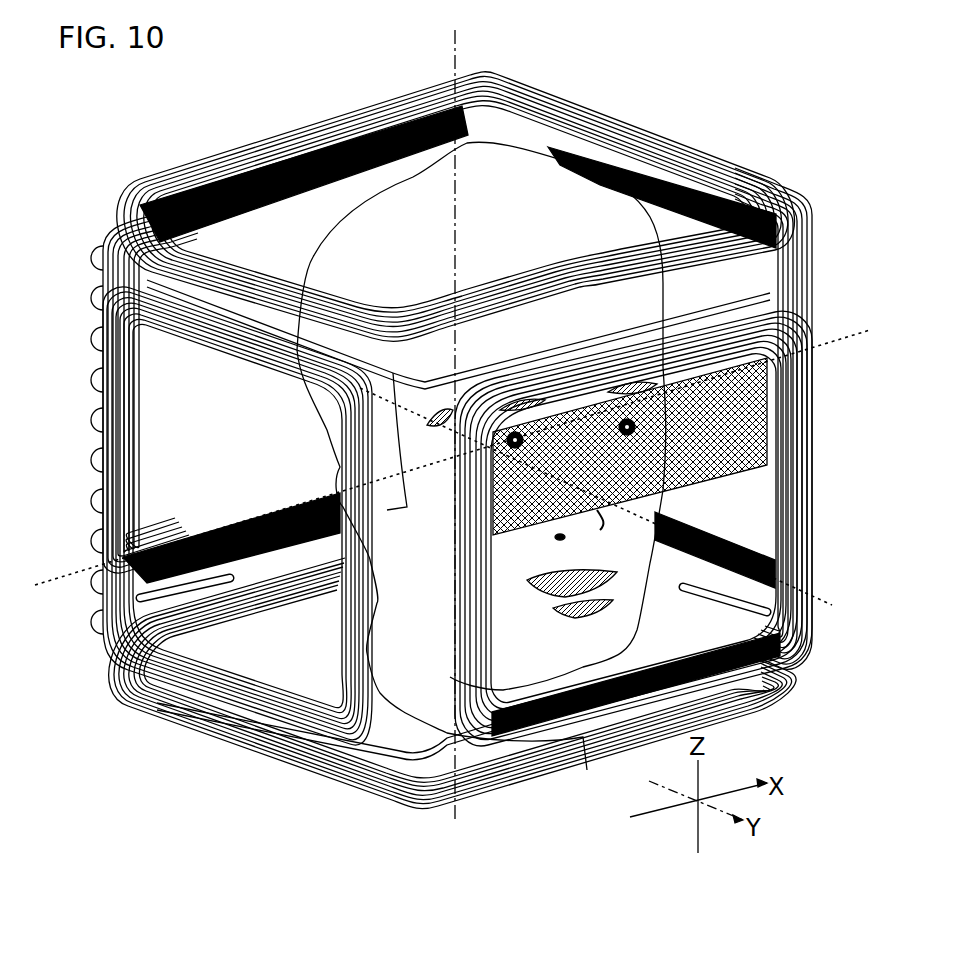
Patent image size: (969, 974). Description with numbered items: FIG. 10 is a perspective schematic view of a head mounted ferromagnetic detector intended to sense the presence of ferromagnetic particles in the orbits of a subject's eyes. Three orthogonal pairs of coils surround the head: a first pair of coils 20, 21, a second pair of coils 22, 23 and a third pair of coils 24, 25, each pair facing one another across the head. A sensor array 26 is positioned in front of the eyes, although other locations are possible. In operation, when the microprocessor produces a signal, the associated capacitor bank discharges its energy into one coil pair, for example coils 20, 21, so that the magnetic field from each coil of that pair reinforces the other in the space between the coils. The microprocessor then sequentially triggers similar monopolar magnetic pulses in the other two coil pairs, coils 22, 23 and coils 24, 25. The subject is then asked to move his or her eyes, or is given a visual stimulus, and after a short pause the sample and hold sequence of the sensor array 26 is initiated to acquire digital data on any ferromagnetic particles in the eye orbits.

The coil 20 is at (207, 349).
The coil 21 is at (802, 253).
The coil 22 is at (107, 234).
The coil 23 is at (452, 790).
The coil 24 is at (282, 132).
The coil 25 is at (219, 742).
The sensor array 26 is at (800, 490).